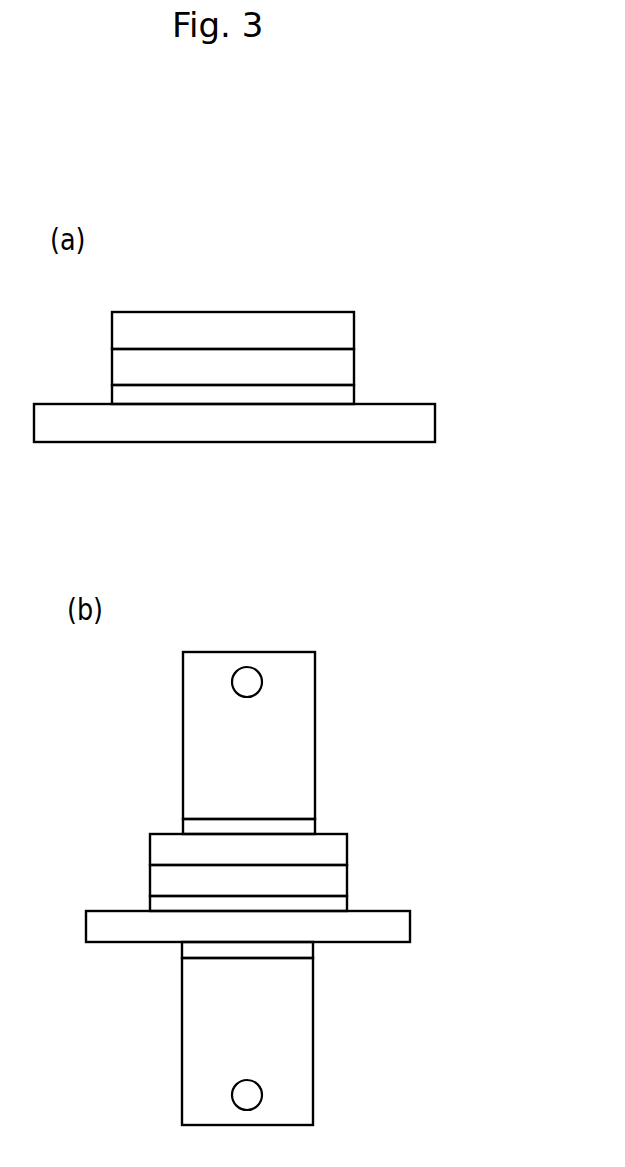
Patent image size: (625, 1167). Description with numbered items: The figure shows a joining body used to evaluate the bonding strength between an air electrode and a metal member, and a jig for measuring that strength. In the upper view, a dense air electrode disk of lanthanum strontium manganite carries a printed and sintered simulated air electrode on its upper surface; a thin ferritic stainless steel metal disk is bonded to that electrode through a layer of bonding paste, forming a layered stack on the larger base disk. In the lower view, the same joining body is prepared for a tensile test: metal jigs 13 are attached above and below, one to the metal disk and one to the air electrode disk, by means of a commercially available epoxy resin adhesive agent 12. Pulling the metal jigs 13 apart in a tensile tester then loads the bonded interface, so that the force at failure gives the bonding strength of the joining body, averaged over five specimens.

The epoxy resin adhesive agent 12 is at (283, 827).
The metal jig 13 is at (298, 720).